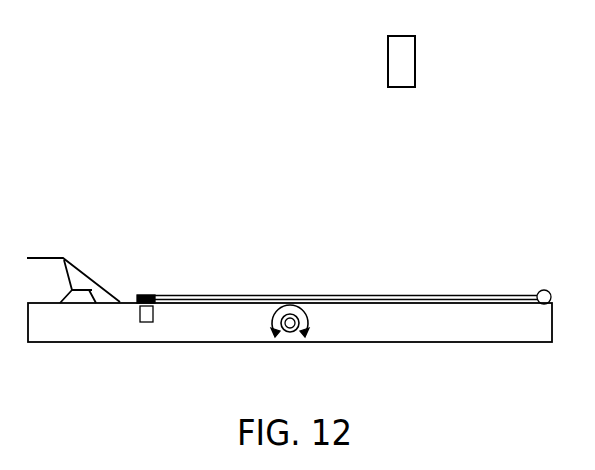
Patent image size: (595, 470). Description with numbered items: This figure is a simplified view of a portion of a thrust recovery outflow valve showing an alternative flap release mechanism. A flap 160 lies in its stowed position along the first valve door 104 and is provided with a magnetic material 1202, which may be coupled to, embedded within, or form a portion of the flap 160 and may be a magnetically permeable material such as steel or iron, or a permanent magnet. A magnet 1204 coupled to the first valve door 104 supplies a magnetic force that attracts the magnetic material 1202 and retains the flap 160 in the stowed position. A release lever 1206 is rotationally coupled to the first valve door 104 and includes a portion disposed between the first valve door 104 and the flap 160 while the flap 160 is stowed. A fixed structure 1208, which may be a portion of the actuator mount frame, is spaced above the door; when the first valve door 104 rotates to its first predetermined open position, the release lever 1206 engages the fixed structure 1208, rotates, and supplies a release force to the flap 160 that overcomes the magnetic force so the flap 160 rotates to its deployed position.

The first valve door 104 is at (92, 330).
The flap 160 is at (233, 295).
The magnetic material 1202 is at (147, 295).
The magnet 1204 is at (153, 313).
The release lever 1206 is at (34, 257).
The fixed structure 1208 is at (415, 62).